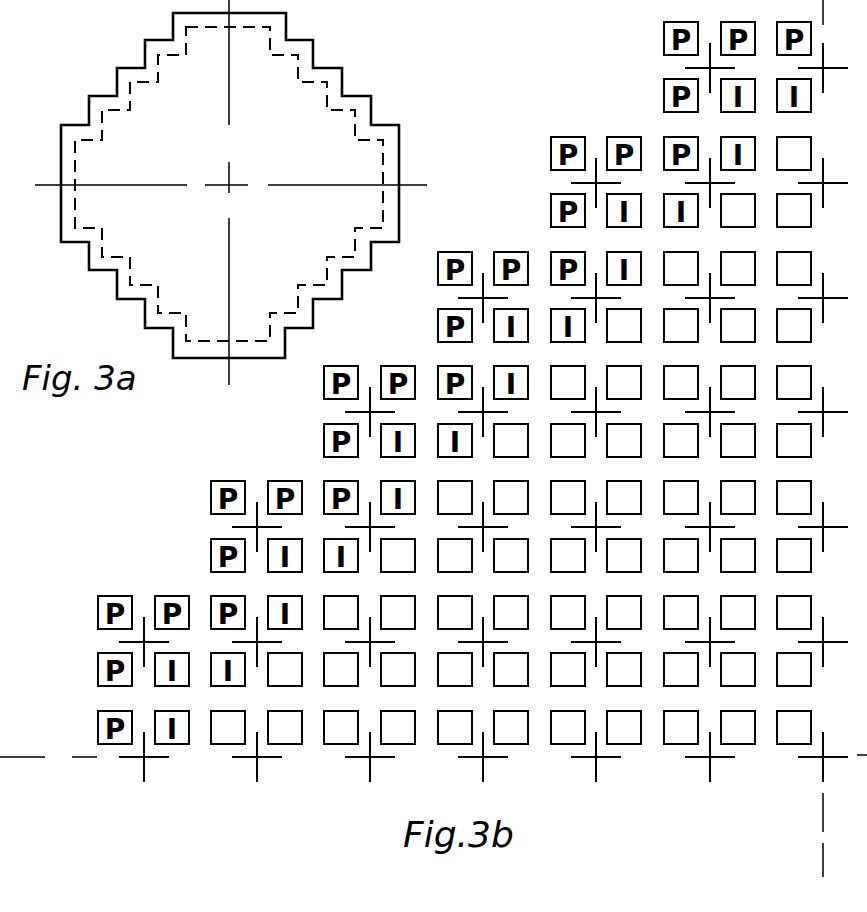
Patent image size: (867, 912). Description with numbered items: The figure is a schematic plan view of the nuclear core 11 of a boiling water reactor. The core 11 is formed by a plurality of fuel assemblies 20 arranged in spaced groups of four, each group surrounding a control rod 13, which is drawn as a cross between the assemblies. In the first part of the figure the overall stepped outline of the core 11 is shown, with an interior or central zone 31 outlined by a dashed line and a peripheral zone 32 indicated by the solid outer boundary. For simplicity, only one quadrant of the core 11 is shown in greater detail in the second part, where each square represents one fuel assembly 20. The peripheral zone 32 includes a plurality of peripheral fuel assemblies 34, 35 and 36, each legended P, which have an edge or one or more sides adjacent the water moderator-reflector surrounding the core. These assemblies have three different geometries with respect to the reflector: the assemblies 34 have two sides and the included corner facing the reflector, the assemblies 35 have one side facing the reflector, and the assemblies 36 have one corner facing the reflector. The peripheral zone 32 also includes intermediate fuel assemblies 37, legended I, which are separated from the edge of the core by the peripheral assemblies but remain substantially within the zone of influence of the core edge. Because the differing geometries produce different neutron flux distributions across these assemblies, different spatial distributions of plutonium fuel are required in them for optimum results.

In FIG. 3A, the nuclear core 11 is at (128, 53).
In FIG. 3A, the interior or central zone 31 is at (82, 160).
In FIG. 3A, the peripheral zone 32 is at (97, 112).
In FIG. 3B, the control rod 13 is at (258, 768).
In FIG. 3B, the fuel assembly 20 is at (216, 745).
In FIG. 3B, the peripheral fuel assembly 34 is at (665, 37).
In FIG. 3B, the peripheral fuel assembly 35 is at (665, 96).
In FIG. 3B, the peripheral fuel assembly 36 is at (665, 147).
In FIG. 3B, the intermediate fuel assembly 37 is at (612, 253).